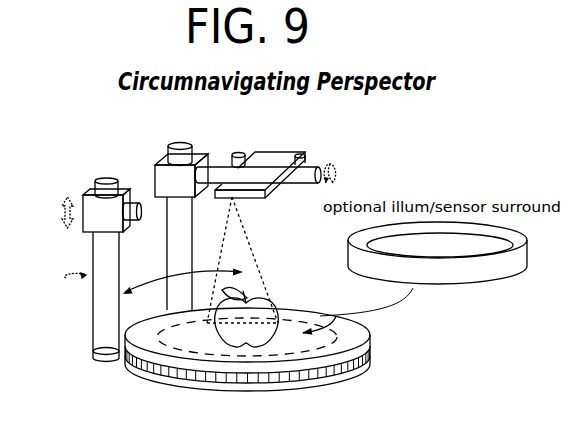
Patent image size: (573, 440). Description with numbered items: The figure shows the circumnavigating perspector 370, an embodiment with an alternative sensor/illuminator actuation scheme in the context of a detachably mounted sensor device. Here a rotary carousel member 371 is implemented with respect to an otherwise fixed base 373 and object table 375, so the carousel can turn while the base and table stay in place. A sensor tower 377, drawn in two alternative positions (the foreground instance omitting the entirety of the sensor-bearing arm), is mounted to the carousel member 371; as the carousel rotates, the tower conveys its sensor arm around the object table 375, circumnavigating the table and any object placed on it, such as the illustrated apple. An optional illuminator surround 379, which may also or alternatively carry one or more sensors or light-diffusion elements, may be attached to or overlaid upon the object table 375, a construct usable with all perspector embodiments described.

The circumnavigating perspector 370 is at (374, 163).
The rotary carousel member 371 is at (138, 366).
The base 373 is at (180, 383).
The object table 375 is at (362, 337).
The sensor tower 377 is at (140, 157).
The illuminator surround 379 is at (350, 260).